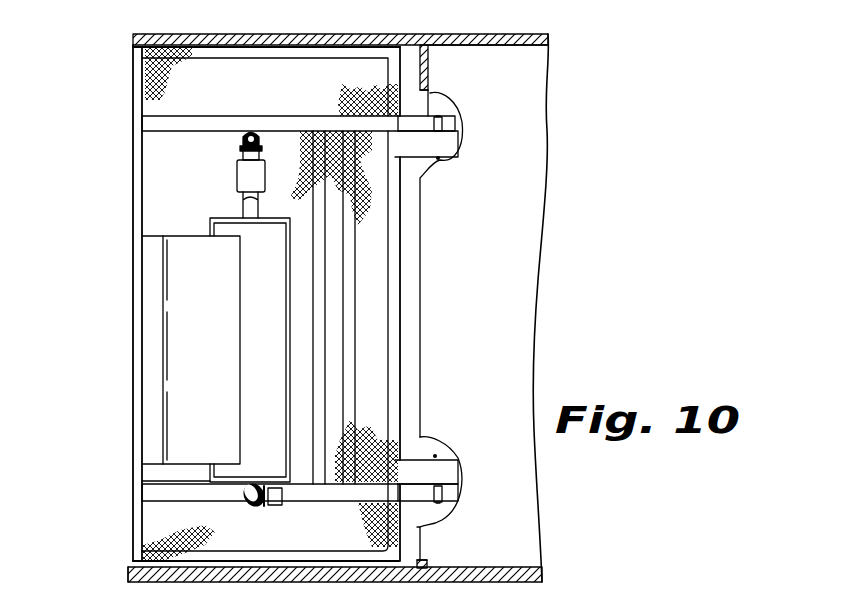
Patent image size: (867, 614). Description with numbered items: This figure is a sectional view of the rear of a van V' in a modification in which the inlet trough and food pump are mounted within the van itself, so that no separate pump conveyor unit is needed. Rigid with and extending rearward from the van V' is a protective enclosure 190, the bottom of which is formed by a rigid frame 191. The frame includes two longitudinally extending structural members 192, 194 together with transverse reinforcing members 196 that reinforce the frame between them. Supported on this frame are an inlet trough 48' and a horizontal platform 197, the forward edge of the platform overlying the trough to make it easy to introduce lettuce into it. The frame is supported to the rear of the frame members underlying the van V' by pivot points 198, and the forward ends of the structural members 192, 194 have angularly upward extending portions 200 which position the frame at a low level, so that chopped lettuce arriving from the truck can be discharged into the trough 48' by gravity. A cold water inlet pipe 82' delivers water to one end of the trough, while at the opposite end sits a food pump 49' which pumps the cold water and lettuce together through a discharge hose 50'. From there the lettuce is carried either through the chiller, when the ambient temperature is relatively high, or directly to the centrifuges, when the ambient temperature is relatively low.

The van V' is at (338, 296).
The protective enclosure 190 is at (175, 35).
The rigid frame 191 is at (122, 559).
The longitudinally extending structural member 192 is at (170, 122).
The longitudinally extending structural member 194 is at (176, 502).
The transverse reinforcing members 196 is at (388, 309).
The horizontal platform 197 is at (206, 332).
The pivot points 198 is at (438, 158).
The angularly upward extending portions 200 is at (432, 94).
The inlet trough 48' is at (227, 342).
The food pump 49' is at (229, 184).
The discharge hose 50' is at (267, 121).
The cold water inlet pipe 82' is at (270, 509).